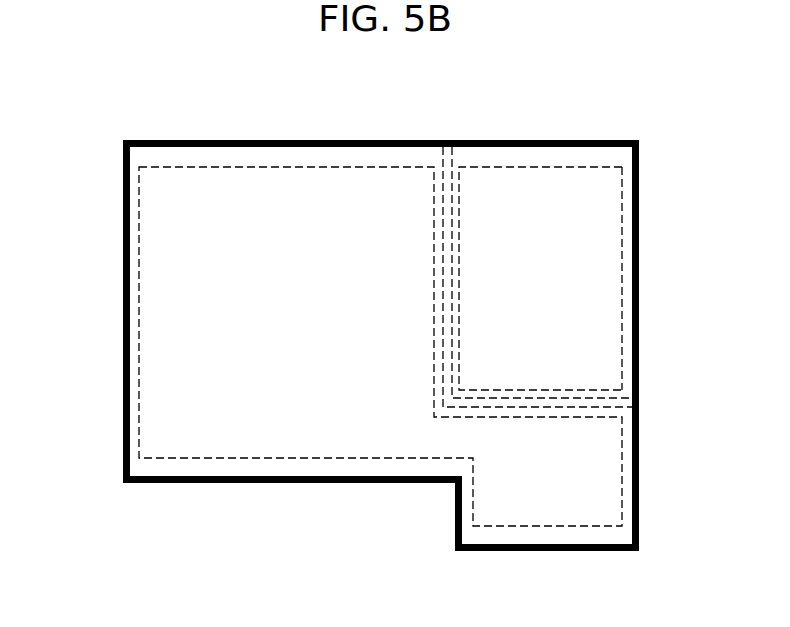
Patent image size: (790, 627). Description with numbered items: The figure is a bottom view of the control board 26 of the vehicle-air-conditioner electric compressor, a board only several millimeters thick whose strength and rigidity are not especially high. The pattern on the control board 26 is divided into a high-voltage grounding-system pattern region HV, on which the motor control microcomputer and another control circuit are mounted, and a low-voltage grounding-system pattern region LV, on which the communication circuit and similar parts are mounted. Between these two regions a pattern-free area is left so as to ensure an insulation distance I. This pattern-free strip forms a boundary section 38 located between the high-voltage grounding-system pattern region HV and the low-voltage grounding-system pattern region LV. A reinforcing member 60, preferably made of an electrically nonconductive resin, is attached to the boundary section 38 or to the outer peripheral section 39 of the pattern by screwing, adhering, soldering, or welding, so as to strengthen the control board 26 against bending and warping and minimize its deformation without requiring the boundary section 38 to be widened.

The control board 26 is at (291, 140).
The high-voltage grounding-system pattern region HV is at (138, 310).
The low-voltage grounding-system pattern region LV is at (622, 243).
The insulation distance I is at (457, 208).
The boundary section 38 is at (597, 392).
The reinforcing member 60 is at (596, 403).
The outer peripheral section 39 is at (285, 469).